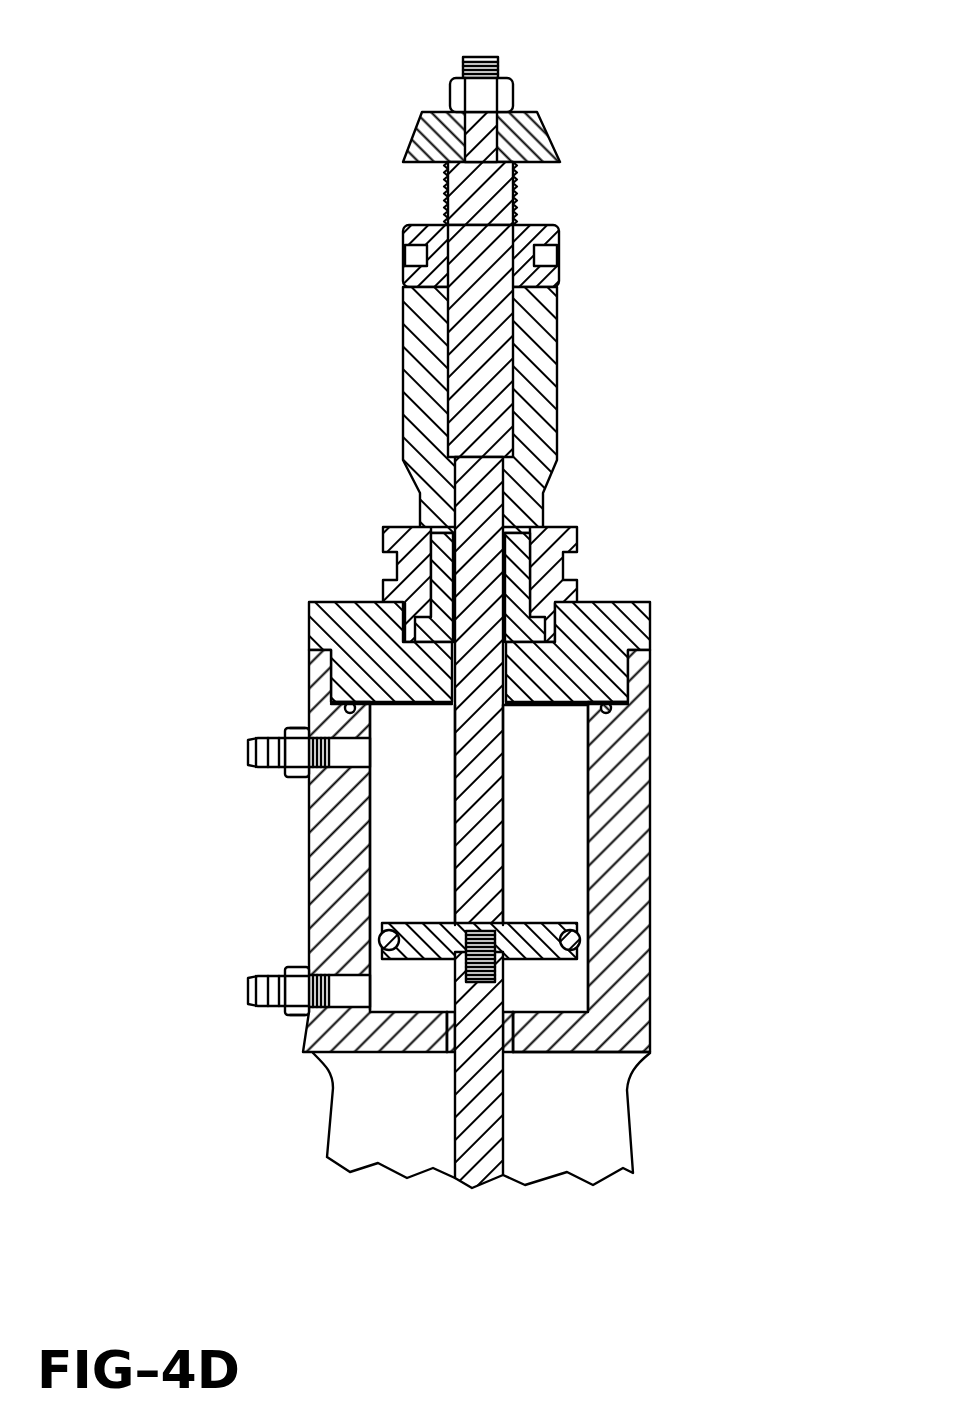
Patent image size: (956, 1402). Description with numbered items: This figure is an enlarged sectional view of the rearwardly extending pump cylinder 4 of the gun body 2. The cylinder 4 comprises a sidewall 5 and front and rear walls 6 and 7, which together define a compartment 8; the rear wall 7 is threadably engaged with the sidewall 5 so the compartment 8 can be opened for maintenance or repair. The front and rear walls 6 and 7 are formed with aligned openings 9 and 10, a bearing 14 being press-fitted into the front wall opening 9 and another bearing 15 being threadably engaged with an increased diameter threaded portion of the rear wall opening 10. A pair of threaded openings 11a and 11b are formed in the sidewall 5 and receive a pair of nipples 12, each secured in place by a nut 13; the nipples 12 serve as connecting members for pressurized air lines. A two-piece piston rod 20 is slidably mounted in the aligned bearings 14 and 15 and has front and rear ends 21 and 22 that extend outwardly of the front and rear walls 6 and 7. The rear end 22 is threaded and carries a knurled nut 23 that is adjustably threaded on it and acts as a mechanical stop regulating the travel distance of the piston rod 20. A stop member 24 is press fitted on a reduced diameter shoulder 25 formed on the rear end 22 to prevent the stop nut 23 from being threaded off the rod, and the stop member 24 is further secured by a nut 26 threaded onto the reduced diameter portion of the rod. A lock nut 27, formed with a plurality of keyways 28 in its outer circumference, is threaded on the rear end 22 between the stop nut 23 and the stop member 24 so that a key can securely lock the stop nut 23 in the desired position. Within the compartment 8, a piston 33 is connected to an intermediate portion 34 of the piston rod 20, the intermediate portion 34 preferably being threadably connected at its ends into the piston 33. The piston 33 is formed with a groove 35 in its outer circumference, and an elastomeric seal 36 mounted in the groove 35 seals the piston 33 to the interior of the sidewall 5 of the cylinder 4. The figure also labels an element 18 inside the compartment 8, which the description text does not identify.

The body 2 is at (634, 1153).
The pump cylinder 4 is at (300, 621).
The sidewall 5 is at (650, 760).
The front wall 6 is at (583, 1055).
The rear wall 7 is at (341, 601).
The compartment 8 is at (563, 820).
The front wall opening 9 is at (442, 1056).
The rear wall opening 10 is at (510, 708).
The threaded opening 11a is at (355, 985).
The threaded opening 11b is at (355, 765).
The nipple 12 is at (248, 752).
The nut 13 is at (300, 723).
The bearing 14 is at (507, 1055).
The bearing 15 is at (576, 547).
The cylinder cavity 18 is at (370, 887).
The piston rod 20 is at (505, 838).
The front end 21 is at (455, 1108).
The rear end 22 is at (447, 193).
The knurled nut 23 is at (560, 395).
The stop member 24 is at (422, 128).
The reduced diameter shoulder 25 is at (507, 160).
The nut 26 is at (514, 78).
The lock nut 27 is at (560, 228).
The keyways 28 is at (552, 262).
The piston 33 is at (520, 923).
The intermediate portion 34 is at (455, 797).
The groove 35 is at (580, 925).
The elastomeric seal 36 is at (582, 945).